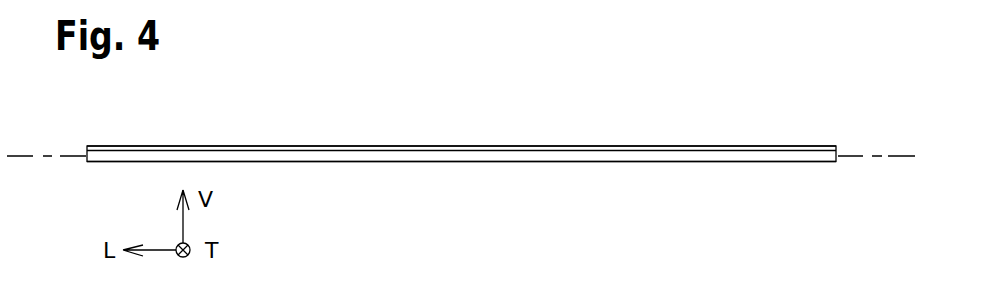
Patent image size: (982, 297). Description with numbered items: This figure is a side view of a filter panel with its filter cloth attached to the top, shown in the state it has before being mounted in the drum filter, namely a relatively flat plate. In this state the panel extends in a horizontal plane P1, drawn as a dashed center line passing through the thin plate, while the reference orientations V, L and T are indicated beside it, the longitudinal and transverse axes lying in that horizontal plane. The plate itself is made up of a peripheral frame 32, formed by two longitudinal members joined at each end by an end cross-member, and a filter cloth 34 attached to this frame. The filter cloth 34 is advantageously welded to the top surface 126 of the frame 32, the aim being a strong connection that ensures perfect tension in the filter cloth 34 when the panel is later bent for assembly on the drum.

The horizontal plane P1 is at (25, 151).
The top surface 126 is at (265, 146).
The filter cloth 34 is at (648, 146).
The peripheral frame 32 is at (573, 162).